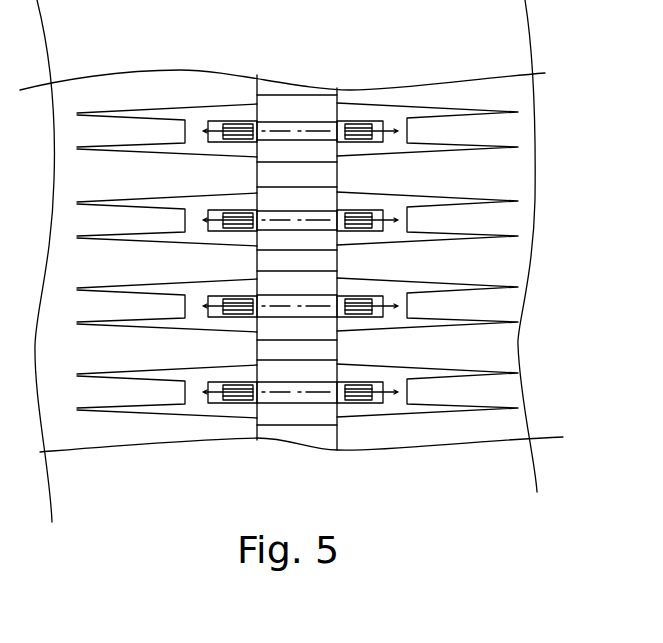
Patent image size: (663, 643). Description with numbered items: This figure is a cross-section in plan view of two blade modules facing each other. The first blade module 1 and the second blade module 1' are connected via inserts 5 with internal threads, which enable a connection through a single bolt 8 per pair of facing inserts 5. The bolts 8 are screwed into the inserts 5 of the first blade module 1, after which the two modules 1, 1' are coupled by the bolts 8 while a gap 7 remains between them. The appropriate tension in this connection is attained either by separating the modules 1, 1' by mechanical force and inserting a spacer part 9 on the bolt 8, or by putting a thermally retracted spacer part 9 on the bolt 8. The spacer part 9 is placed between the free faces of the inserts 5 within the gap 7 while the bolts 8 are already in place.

The first blade module 1 is at (77, 261).
The second blade module 1' is at (502, 246).
The insert 5 is at (398, 127).
The gap 7 is at (306, 177).
The bolt 8 is at (306, 123).
The spacer part 9 is at (277, 97).